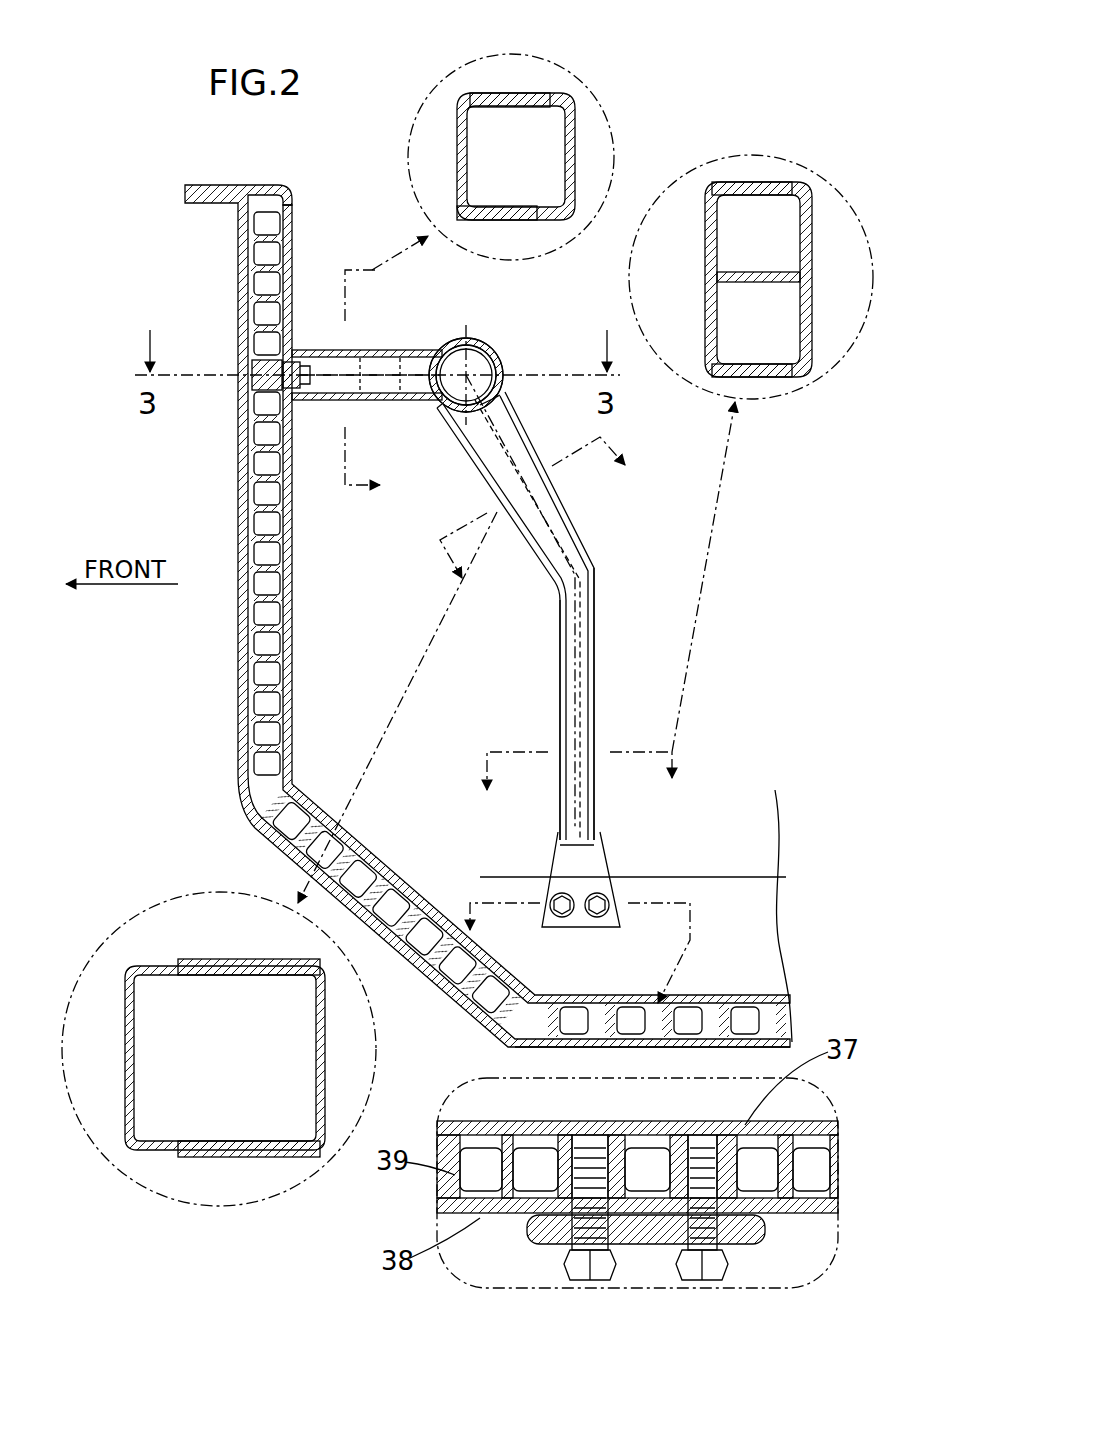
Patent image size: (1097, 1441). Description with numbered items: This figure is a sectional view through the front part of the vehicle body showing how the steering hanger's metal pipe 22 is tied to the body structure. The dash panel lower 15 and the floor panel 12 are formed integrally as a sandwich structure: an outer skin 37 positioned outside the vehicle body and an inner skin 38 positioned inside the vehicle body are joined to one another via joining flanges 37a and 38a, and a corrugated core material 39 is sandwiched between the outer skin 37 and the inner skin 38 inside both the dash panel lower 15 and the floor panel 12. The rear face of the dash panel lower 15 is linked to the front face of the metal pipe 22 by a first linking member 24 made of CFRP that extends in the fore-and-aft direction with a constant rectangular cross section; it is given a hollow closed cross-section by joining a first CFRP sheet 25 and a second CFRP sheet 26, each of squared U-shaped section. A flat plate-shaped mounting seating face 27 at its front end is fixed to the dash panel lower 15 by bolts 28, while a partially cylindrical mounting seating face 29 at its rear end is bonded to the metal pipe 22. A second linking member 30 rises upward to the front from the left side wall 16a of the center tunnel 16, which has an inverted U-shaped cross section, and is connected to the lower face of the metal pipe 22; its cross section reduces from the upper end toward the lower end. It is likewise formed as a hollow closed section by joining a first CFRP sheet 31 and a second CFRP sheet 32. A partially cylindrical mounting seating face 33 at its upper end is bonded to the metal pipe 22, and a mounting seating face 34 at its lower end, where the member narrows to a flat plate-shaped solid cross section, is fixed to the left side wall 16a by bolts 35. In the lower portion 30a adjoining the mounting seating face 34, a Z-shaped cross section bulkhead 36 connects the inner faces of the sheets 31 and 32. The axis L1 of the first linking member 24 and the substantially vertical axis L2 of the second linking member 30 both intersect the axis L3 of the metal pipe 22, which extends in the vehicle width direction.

The floor panel 12 is at (745, 993).
The dash panel lower 15 is at (451, 592).
The center tunnel 16 is at (692, 1024).
The left side wall 16a is at (650, 875).
The metal pipe 22 is at (503, 383).
The first linking member 24 is at (367, 367).
The first CFRP sheet 25 is at (405, 352).
The second CFRP sheet 26 is at (358, 400).
The mounting seating face 27 is at (292, 362).
The bolts 28 is at (302, 388).
The mounting seating face 29 is at (440, 412).
The second linking member 30 is at (482, 727).
The lower portion 30a is at (597, 672).
The first CFRP sheet 31 is at (555, 508).
The second CFRP sheet 32 is at (540, 555).
The mounting seating face 33 is at (497, 397).
The mounting seating face 34 is at (587, 1072).
The bolts 35 is at (597, 915).
The bulkhead 36 is at (565, 658).
The outer skin 37 is at (235, 543).
The joining flange 37a is at (200, 203).
The inner skin 38 is at (297, 577).
The joining flange 38a is at (212, 184).
The corrugated core material 39 is at (255, 478).
The axis of the first linking member L1 is at (388, 397).
The axis of the second linking member L2 is at (530, 462).
The axis of the metal pipe L3 is at (470, 372).